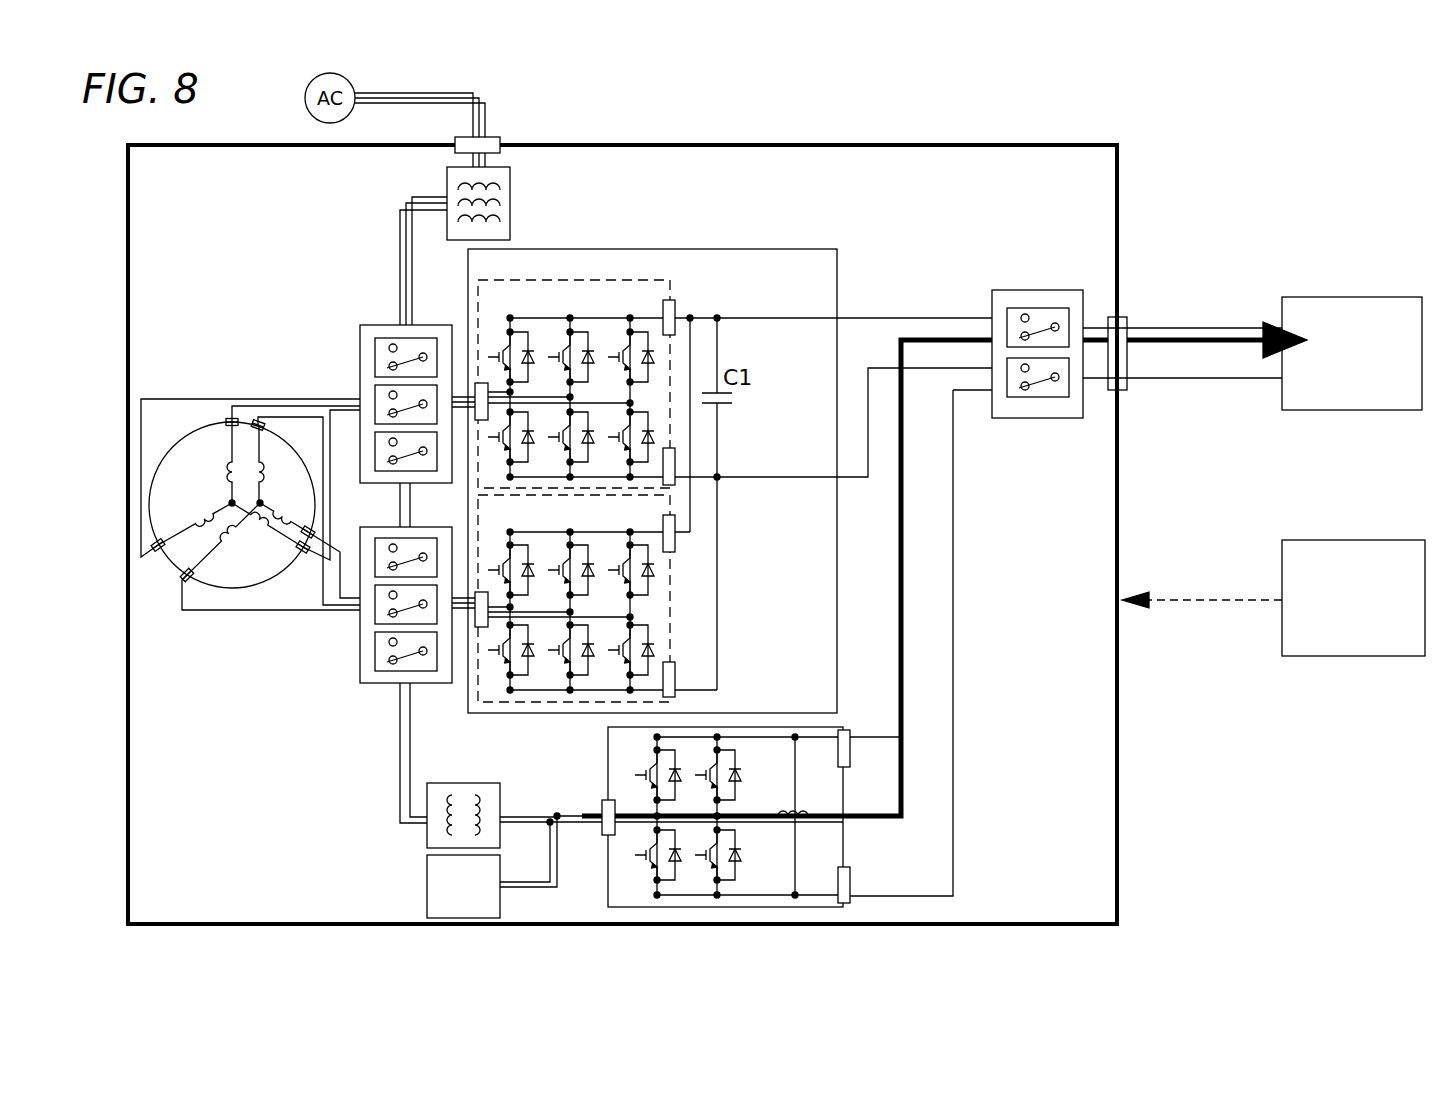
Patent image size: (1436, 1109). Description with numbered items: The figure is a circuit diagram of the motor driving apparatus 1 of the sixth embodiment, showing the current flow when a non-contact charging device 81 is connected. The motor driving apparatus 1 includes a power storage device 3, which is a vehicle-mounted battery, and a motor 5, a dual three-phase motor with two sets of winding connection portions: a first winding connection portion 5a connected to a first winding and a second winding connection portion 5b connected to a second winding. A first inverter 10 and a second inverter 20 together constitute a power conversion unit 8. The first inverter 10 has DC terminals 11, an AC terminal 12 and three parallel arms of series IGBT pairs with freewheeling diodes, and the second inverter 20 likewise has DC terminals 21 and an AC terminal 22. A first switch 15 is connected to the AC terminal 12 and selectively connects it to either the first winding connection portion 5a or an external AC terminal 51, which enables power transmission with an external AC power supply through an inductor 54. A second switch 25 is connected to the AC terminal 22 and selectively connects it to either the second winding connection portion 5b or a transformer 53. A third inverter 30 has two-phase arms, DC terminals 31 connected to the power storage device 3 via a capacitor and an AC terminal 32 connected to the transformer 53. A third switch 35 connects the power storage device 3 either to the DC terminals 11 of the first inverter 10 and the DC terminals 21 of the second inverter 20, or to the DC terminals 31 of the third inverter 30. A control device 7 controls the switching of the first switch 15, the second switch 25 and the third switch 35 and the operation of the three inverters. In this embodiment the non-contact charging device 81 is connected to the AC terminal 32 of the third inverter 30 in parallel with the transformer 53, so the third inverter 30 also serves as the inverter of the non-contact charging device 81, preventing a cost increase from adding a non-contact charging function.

The motor driving apparatus 1 is at (1170, 120).
The power storage device 3 is at (1370, 297).
The motor 5 is at (155, 568).
The first winding connection portion 5a is at (232, 418).
The second winding connection portion 5b is at (259, 421).
The control device 7 is at (1362, 540).
The power conversion unit 8 is at (837, 282).
The first inverter 10 is at (605, 278).
The DC terminals 11 is at (676, 302).
The AC terminal 12 is at (476, 386).
The first switch 15 is at (385, 325).
The second inverter 20 is at (548, 713).
The DC terminals 21 is at (676, 545).
The AC terminal 22 is at (480, 628).
The second switch 25 is at (372, 683).
The third inverter 30 is at (752, 907).
The DC terminals 31 is at (850, 748).
The AC terminal 32 is at (606, 838).
The third switch 35 is at (1045, 290).
The external AC terminal 51 is at (500, 143).
The transformer 53 is at (478, 783).
The inductor 54 is at (510, 200).
The non-contact charging device 81 is at (427, 880).